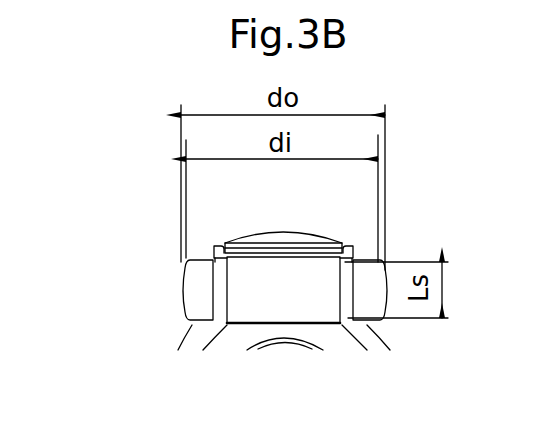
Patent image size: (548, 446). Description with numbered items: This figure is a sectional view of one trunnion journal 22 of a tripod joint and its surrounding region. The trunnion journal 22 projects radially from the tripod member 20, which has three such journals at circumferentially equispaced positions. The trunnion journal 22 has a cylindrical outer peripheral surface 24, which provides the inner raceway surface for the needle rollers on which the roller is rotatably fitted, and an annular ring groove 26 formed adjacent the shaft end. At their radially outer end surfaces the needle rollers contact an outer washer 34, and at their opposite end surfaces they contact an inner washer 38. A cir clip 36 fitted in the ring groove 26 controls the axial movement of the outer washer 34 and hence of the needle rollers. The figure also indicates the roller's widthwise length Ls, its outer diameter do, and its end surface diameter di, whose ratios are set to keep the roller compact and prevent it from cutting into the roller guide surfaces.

The tripod member 20 is at (260, 337).
The trunnion journal 22 is at (312, 238).
The cylindrical outer peripheral surface 24 is at (268, 300).
The annular ring groove 26 is at (289, 245).
The outer washer 34 is at (212, 250).
The cir clip 36 is at (216, 246).
The inner washer 38 is at (188, 324).